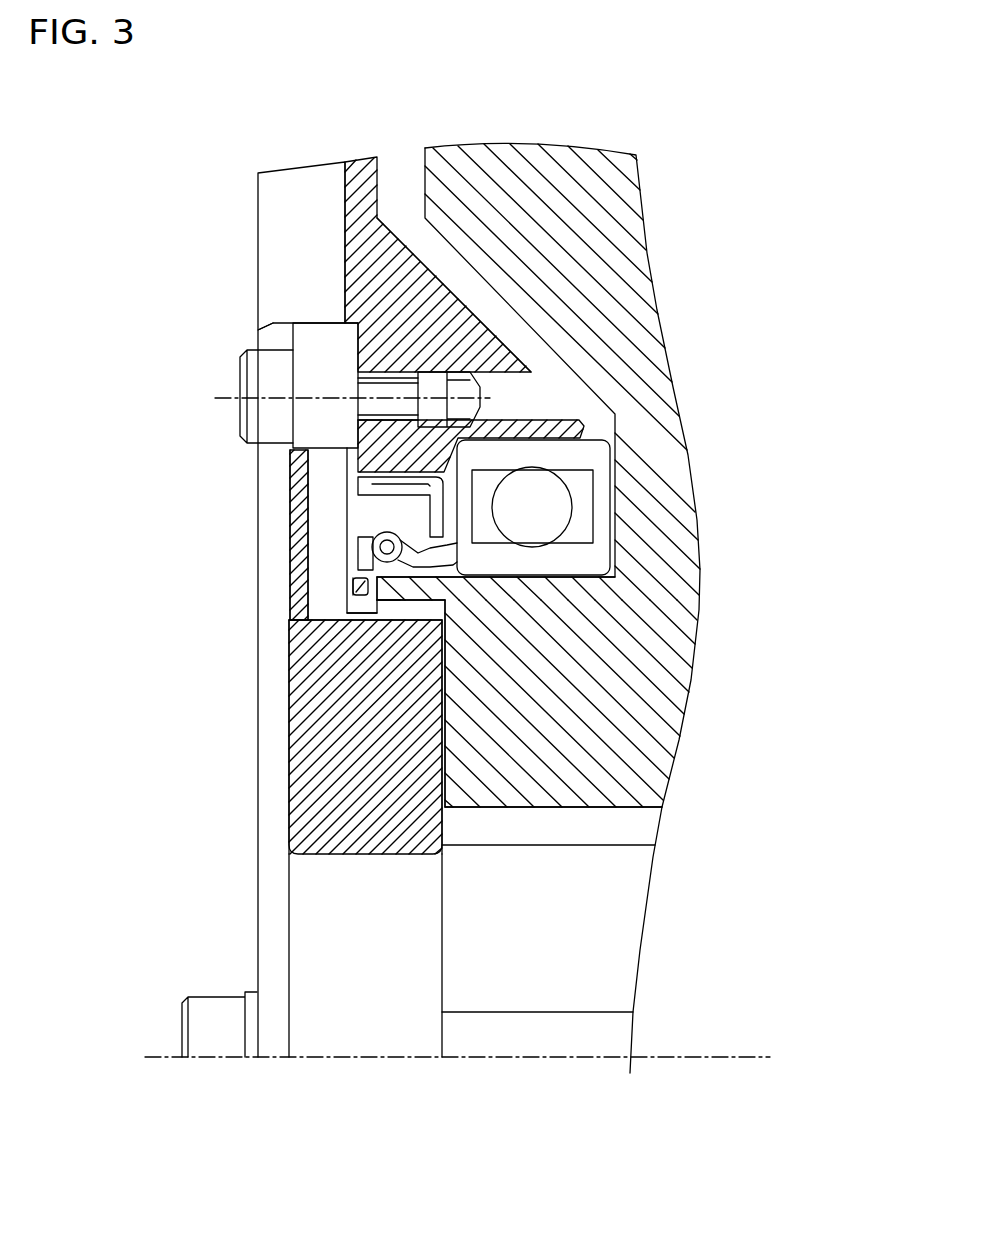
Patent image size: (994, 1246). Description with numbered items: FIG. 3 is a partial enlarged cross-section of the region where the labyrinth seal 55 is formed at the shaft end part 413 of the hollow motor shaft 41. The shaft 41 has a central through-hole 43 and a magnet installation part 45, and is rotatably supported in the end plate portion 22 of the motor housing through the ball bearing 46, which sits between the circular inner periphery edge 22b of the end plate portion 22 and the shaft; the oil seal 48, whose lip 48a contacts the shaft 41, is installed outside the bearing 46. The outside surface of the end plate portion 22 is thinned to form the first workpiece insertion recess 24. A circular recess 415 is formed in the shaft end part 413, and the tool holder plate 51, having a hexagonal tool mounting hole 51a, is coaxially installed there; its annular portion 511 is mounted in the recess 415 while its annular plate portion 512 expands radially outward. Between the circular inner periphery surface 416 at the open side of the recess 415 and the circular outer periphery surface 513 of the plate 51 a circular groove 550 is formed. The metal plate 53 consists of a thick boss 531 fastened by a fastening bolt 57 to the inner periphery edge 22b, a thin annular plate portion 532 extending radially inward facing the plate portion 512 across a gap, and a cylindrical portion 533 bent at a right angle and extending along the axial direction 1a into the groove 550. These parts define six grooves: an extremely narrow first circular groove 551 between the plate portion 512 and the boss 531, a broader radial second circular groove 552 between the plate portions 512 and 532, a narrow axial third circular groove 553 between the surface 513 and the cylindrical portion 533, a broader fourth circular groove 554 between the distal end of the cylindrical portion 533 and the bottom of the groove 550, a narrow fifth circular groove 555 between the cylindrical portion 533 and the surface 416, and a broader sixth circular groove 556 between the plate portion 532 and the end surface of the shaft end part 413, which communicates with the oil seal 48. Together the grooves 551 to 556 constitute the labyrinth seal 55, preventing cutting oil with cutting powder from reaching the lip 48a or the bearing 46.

The axial direction 1a is at (172, 1053).
The end plate portion 22 is at (363, 182).
The circular inner periphery edge 22b is at (445, 305).
The first workpiece insertion recess 24 is at (293, 203).
The hollow motor shaft 41 is at (625, 765).
The through-hole 43 is at (534, 974).
The magnet installation part 45 is at (580, 246).
The ball bearing 46 is at (590, 458).
The oil seal 48 is at (447, 477).
The lip 48a is at (400, 568).
The tool holder plate 51 is at (287, 845).
The tool mounting hole 51a is at (391, 974).
The annular portion 511 is at (282, 826).
The annular plate portion 512 is at (298, 525).
The circular outer periphery surface 513 is at (398, 597).
The metal plate 53 is at (312, 472).
The boss 531 is at (327, 352).
The annular plate portion 532 is at (330, 508).
The cylindrical portion 533 is at (402, 620).
The labyrinth seal 55 is at (358, 560).
The circular groove 550 is at (370, 605).
The first circular groove 551 is at (285, 438).
The second circular groove 552 is at (312, 563).
The third circular groove 553 is at (370, 605).
The fourth circular groove 554 is at (345, 762).
The fifth circular groove 555 is at (353, 587).
The sixth circular groove 556 is at (378, 588).
The fastening bolt 57 is at (270, 370).
The shaft end part 413 is at (493, 780).
The circular recess 415 is at (442, 700).
The circular inner periphery surface 416 is at (340, 622).